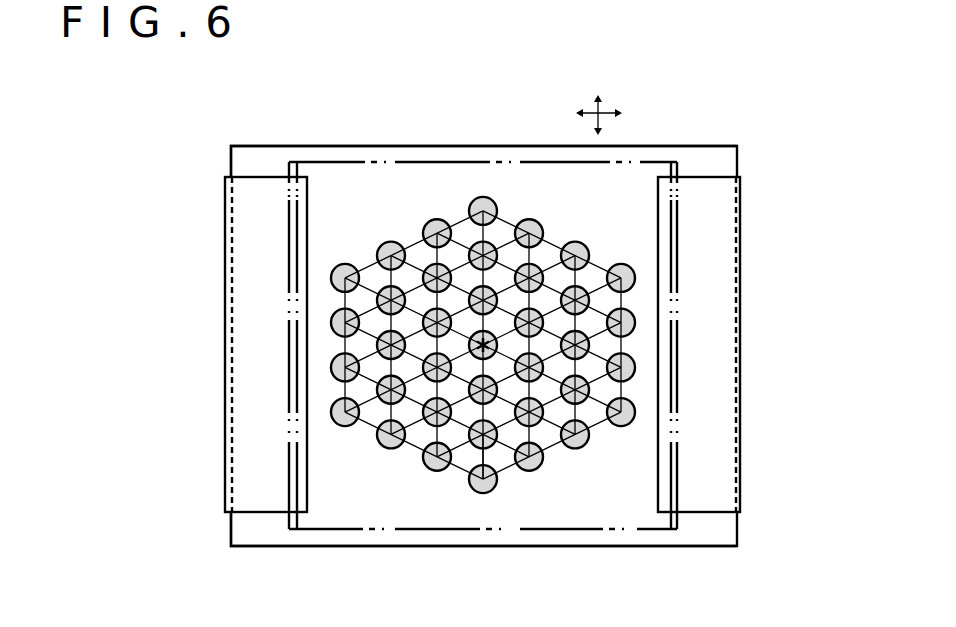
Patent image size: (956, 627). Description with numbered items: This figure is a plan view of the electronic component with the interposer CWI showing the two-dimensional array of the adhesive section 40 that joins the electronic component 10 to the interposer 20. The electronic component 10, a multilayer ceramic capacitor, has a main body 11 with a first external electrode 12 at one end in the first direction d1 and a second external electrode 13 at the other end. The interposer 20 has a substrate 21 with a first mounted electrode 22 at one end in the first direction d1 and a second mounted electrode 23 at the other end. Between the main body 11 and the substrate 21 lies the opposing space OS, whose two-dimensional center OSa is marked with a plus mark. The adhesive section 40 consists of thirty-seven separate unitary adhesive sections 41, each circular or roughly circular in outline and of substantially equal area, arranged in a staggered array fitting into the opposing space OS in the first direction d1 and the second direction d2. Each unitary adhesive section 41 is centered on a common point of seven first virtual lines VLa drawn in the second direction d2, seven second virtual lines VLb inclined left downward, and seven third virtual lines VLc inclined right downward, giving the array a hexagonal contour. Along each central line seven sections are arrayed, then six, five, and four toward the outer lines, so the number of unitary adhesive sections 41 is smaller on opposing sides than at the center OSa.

The electronic component 10 is at (478, 160).
The main body 11 is at (384, 172).
The first external electrode 12 is at (288, 160).
The second external electrode 13 is at (672, 160).
The interposer 20 is at (240, 156).
The substrate 21 is at (240, 531).
The first mounted electrode 22 is at (243, 386).
The second mounted electrode 23 is at (721, 386).
The adhesive section 40 is at (489, 492).
The unitary adhesive section 41 is at (482, 493).
The electronic component with the interposer CWI is at (238, 138).
The first virtual line VLa is at (488, 232).
The second virtual line VLb is at (466, 221).
The third virtual line VLc is at (594, 265).
The opposing space OS is at (487, 398).
The center of the opposing space OSa is at (492, 357).
The first direction d1 is at (612, 116).
The second direction d2 is at (598, 102).